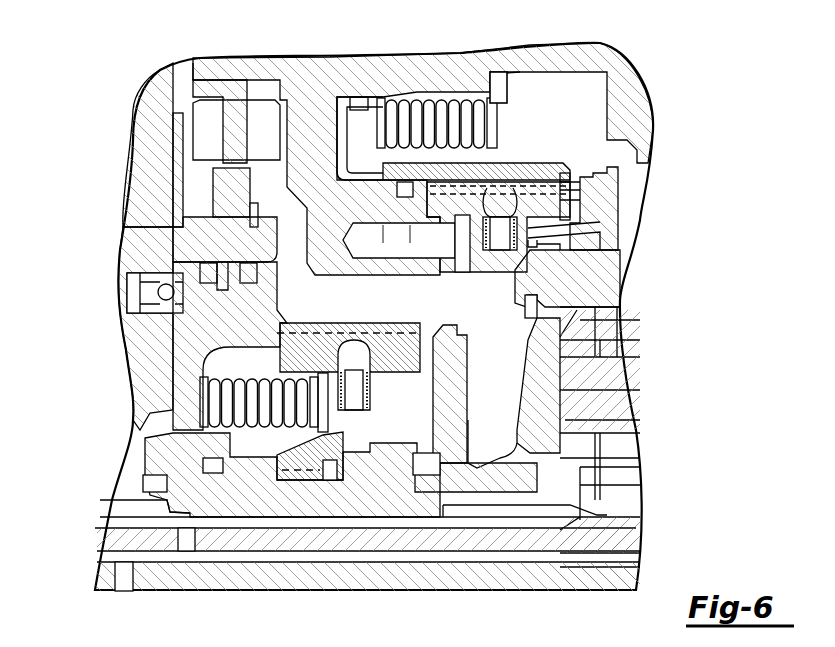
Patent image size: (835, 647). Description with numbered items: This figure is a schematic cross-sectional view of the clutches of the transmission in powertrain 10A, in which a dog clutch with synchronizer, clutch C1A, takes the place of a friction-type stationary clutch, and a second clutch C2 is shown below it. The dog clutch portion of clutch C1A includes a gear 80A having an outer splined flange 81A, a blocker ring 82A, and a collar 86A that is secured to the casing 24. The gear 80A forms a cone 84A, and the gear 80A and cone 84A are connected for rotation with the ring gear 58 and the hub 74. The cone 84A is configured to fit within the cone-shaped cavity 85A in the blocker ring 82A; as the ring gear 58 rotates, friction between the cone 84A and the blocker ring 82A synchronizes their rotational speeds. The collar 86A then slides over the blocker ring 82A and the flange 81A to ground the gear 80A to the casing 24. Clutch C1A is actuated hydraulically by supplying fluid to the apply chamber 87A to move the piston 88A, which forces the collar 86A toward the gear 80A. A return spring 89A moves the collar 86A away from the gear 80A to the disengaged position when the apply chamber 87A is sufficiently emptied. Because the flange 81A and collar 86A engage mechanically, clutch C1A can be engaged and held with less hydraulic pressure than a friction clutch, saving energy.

The powertrain 10A is at (667, 87).
The apply chamber 87A is at (338, 118).
The return spring 89A is at (428, 108).
The piston 88A is at (507, 177).
The clutch C1A is at (535, 150).
The collar 86A is at (545, 199).
The blocker ring 82A is at (585, 212).
The outer splined flange 81A is at (600, 227).
The gear 80A is at (608, 243).
The ring gear 58 is at (592, 292).
The cone 84A is at (562, 240).
The cone-shaped cavity 85A is at (532, 237).
The hub 74 is at (538, 395).
The casing 24 is at (317, 193).
The clutch C2 is at (245, 488).